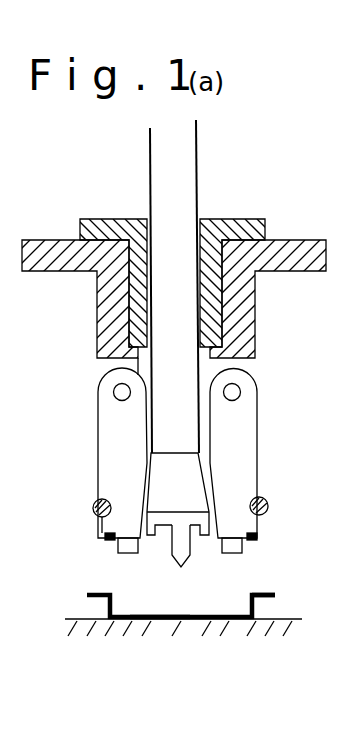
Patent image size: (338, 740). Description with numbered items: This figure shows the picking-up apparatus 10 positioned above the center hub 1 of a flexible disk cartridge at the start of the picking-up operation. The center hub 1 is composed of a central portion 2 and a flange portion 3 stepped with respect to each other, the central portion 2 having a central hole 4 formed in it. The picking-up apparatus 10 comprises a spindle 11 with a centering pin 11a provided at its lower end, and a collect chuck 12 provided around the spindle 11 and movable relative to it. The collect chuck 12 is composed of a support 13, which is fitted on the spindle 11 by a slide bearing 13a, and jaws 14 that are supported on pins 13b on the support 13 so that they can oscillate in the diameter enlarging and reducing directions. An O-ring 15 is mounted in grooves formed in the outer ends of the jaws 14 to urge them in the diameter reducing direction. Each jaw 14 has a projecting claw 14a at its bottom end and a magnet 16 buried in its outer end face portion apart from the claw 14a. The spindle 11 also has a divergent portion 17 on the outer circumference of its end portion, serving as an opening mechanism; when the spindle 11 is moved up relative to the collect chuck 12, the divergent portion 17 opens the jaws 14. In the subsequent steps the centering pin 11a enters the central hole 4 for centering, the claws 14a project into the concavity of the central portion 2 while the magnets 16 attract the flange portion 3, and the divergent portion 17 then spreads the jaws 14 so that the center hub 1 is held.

The center hub 1 is at (96, 605).
The central portion 2 is at (203, 620).
The flange portion 3 is at (267, 595).
The central hole 4 is at (157, 620).
The picking-up apparatus 10 is at (138, 165).
The spindle 11 is at (200, 182).
The centering pin 11a is at (189, 552).
The collect chuck 12 is at (272, 408).
The support 13 is at (98, 302).
The slide bearing 13a is at (97, 217).
The pin 13b is at (113, 393).
The jaw 14 is at (100, 453).
The claw 14a is at (128, 554).
The O-ring 15 is at (93, 505).
The magnet 16 is at (105, 537).
The divergent portion 17 is at (210, 488).